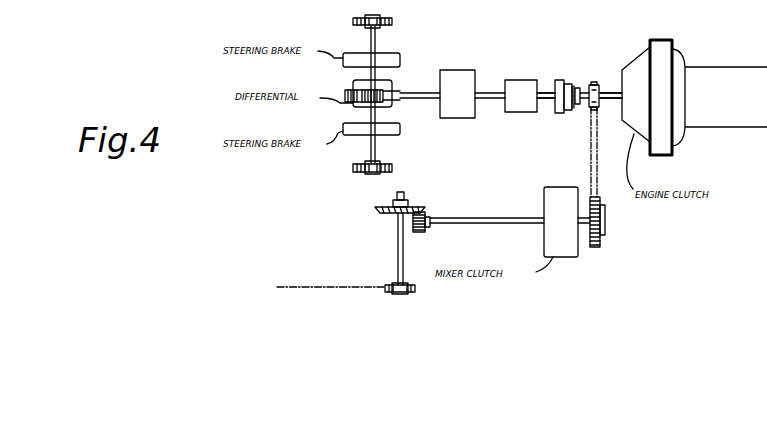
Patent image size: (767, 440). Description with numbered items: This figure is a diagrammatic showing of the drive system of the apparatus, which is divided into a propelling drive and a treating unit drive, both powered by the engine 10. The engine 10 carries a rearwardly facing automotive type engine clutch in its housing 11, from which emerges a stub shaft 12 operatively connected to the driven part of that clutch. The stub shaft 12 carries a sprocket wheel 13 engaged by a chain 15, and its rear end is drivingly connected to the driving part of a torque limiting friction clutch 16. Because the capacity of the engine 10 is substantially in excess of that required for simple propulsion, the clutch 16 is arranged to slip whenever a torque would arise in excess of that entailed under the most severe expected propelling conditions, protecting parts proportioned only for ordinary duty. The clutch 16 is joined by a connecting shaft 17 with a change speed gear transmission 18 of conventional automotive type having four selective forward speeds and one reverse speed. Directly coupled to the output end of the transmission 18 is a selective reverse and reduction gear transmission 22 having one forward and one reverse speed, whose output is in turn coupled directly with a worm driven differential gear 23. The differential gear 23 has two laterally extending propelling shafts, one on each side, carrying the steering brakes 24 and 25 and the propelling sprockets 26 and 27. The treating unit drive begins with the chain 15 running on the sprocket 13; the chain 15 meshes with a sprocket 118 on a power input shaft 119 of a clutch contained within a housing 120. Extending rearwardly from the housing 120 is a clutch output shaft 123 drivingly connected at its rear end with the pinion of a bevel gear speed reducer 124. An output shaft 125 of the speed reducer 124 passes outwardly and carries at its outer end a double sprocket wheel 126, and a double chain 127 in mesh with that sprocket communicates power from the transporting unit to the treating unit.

The engine 10 is at (754, 66).
The housing 11 is at (633, 62).
The stub shaft 12 is at (609, 91).
The sprocket wheel 13 is at (593, 82).
The chain 15 is at (591, 168).
The torque limiting friction clutch 16 is at (572, 80).
The connecting shaft 17 is at (548, 100).
The change speed gear transmission 18 is at (522, 80).
The reverse and reduction gear transmission 22 is at (462, 118).
The worm driven differential gear 23 is at (352, 84).
The steering brake 24 is at (400, 60).
The steering brake 25 is at (400, 128).
The propelling sprocket 26 is at (392, 22).
The propelling sprocket 27 is at (392, 167).
The sprocket 118 is at (598, 248).
The power input shaft 119 is at (580, 216).
The housing 120 is at (544, 240).
The clutch output shaft 123 is at (495, 218).
The bevel gear speed reducer 124 is at (425, 210).
The output shaft 125 is at (398, 240).
The double sprocket wheel 126 is at (415, 288).
The double chain 127 is at (336, 283).